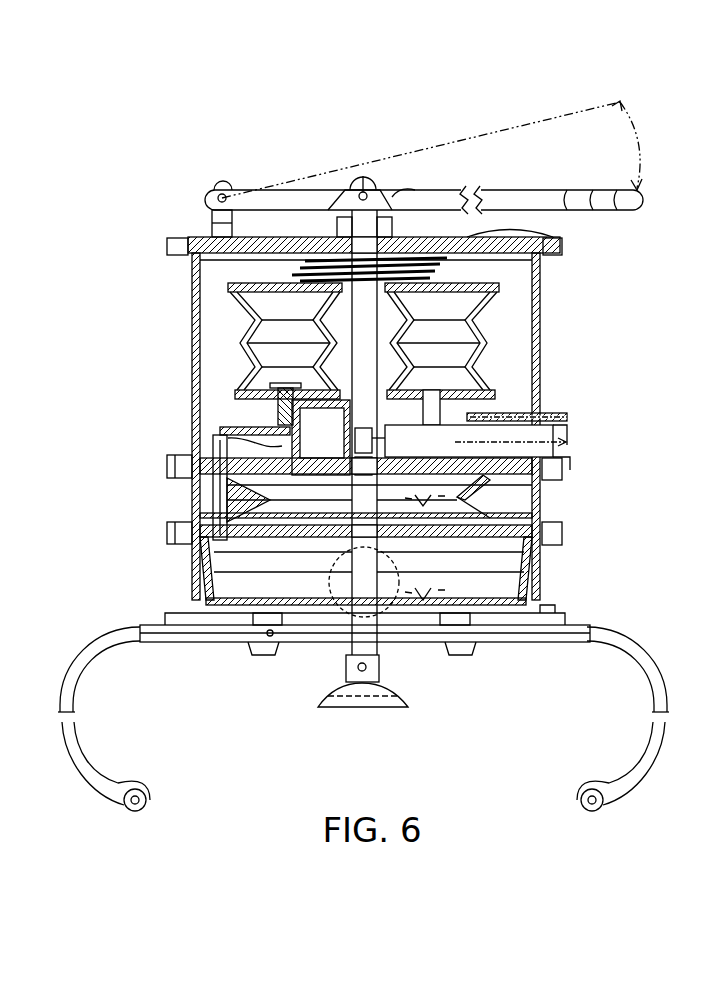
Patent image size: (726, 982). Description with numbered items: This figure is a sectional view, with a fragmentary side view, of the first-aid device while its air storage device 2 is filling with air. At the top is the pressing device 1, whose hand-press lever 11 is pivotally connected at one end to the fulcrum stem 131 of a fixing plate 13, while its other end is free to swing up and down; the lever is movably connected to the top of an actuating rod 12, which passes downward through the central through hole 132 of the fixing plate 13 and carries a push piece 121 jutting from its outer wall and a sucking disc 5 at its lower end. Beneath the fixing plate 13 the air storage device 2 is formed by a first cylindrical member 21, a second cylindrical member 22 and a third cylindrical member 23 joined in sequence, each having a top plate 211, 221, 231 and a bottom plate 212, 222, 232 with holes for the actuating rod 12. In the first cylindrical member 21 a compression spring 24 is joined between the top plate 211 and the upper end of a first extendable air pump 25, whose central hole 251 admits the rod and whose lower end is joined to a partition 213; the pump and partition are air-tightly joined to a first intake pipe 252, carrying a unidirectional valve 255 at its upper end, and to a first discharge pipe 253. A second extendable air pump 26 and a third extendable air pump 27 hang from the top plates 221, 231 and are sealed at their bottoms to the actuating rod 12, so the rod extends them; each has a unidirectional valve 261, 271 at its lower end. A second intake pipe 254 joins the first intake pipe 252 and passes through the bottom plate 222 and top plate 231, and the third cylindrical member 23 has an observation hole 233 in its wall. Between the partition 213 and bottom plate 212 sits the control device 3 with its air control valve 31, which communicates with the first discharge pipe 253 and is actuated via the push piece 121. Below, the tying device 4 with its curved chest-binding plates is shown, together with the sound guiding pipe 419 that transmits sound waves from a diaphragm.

The pressing device 1 is at (527, 112).
The hand-press lever 11 is at (580, 193).
The actuating rod 12 is at (340, 198).
The fixing plate 13 is at (200, 215).
The fulcrum stem 131 is at (214, 195).
The central through hole 132 is at (400, 190).
The air storage device 2 is at (360, 419).
The first cylindrical member 21 is at (540, 283).
The top plate 211 is at (190, 270).
The bottom plate 212 is at (565, 458).
The partition 213 is at (300, 412).
The second cylindrical member 22 is at (212, 508).
The top plate 221 is at (205, 476).
The bottom plate 222 is at (555, 546).
The third cylindrical member 23 is at (376, 577).
The top plate 231 is at (225, 552).
The bottom plate 232 is at (548, 626).
The observation hole 233 is at (346, 660).
The compression spring 24 is at (553, 237).
The first extendable air pump 25 is at (358, 354).
The central hole 251 is at (240, 345).
The first intake pipe 252 is at (290, 432).
The first discharge pipe 253 is at (500, 395).
The second intake pipe 254 is at (225, 490).
The unidirectional valve 255 is at (250, 388).
The second extendable air pump 26 is at (185, 540).
The unidirectional valve 261 is at (545, 515).
The third extendable air pump 27 is at (340, 667).
The unidirectional valve 271 is at (500, 600).
The control device 3 is at (580, 439).
The air control valve 31 is at (505, 414).
The tying device 4 is at (630, 632).
The sound guiding pipe 419 is at (268, 641).
The sucking disc 5 is at (408, 695).
The push piece 121 is at (530, 487).